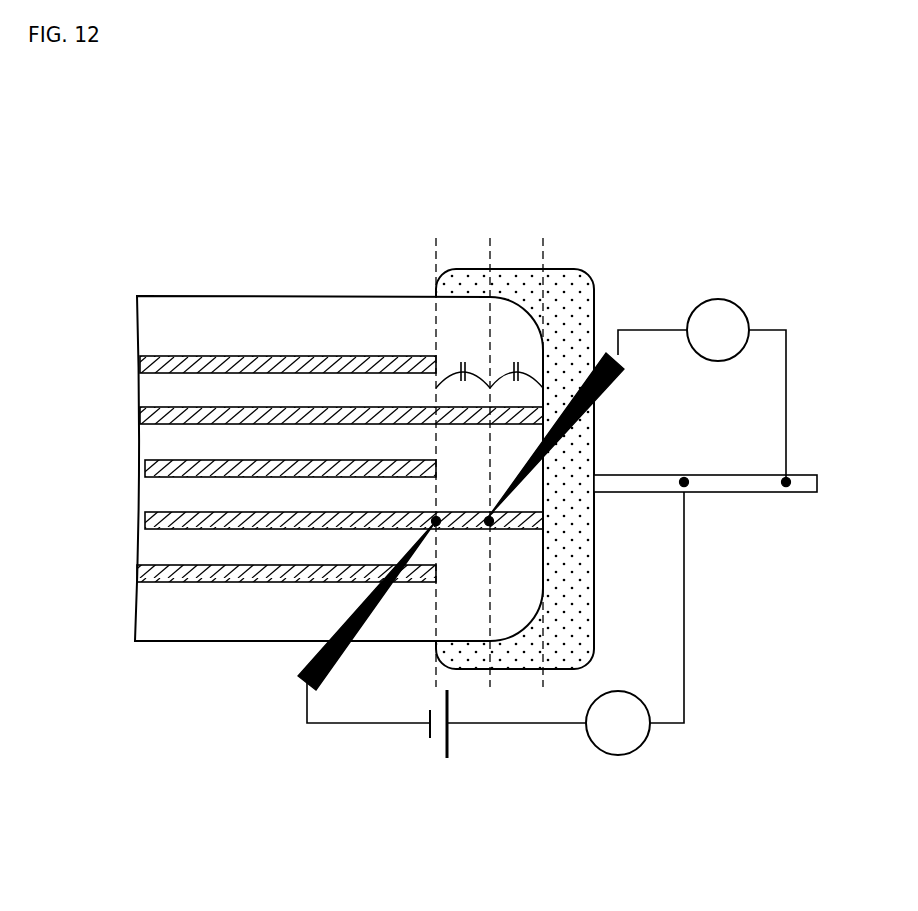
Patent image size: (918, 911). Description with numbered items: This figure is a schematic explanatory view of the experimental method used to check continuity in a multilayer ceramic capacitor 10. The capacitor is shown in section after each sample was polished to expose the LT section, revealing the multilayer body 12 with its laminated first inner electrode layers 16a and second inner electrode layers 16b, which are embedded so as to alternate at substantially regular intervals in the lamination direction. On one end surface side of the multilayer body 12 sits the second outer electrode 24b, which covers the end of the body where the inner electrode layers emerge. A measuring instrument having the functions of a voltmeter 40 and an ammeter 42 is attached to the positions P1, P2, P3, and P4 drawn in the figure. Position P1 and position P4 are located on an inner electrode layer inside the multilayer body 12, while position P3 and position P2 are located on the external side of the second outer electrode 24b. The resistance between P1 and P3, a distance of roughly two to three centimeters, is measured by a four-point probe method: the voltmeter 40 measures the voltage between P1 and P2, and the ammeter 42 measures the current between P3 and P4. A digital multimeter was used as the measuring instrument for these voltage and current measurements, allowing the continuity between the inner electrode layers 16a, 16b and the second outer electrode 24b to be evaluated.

The multilayer ceramic capacitor 10 is at (398, 275).
The multilayer body 12 is at (217, 296).
The first inner electrode layers 16a is at (192, 355).
The second inner electrode layers 16b is at (178, 513).
The second outer electrode 24b is at (575, 268).
The voltmeter 40 is at (720, 298).
The ammeter 42 is at (620, 757).
The position P1 is at (489, 521).
The position P2 is at (788, 487).
The position P3 is at (681, 478).
The position P4 is at (436, 521).